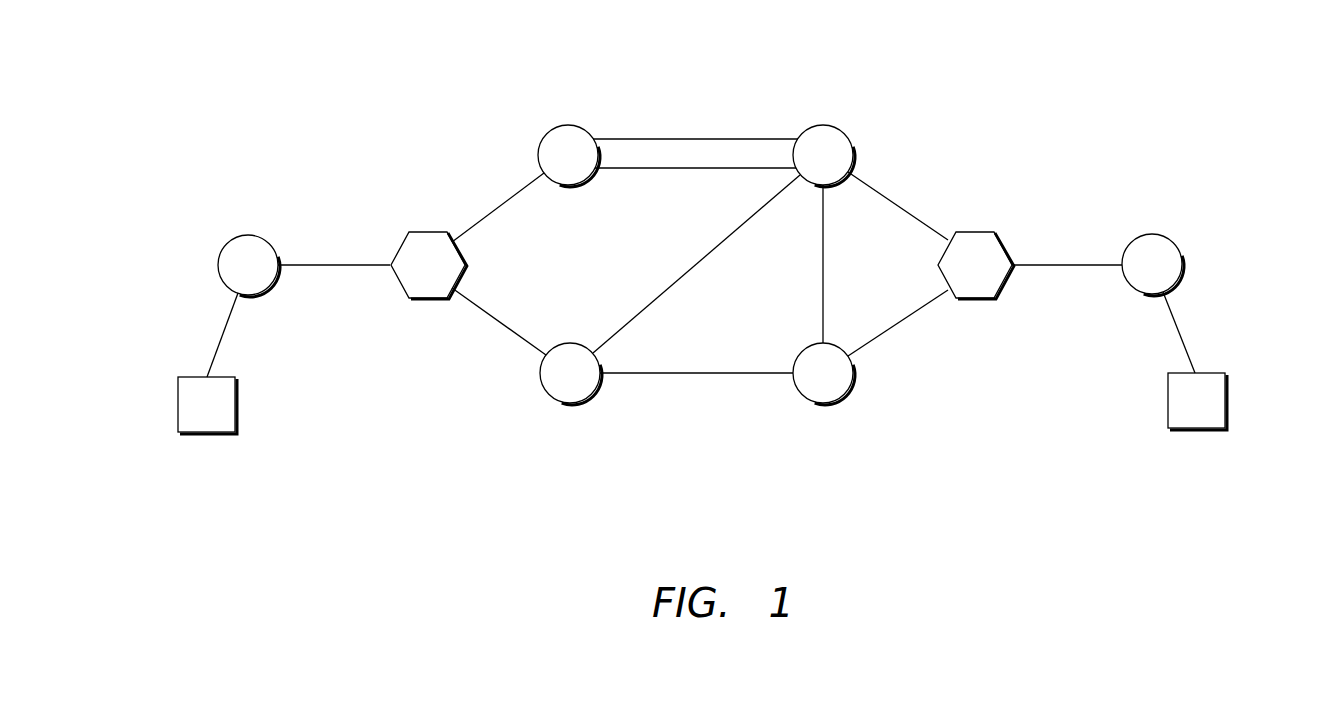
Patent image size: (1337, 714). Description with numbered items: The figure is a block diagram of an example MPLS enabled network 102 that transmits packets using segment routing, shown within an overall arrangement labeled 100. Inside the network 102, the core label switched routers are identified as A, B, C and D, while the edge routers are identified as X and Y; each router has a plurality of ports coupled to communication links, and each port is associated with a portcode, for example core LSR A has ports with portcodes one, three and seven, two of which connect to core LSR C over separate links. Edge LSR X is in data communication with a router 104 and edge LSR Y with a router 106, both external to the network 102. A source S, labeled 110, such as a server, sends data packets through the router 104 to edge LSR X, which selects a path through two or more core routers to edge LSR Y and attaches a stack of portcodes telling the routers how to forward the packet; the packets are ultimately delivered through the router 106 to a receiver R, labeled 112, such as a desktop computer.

The network system 100 is at (1121, 47).
The MPLS enabled network 102 is at (385, 438).
The router 104 is at (230, 240).
The router 106 is at (1185, 257).
The source S 110 is at (238, 398).
The receiver R 112 is at (1227, 398).